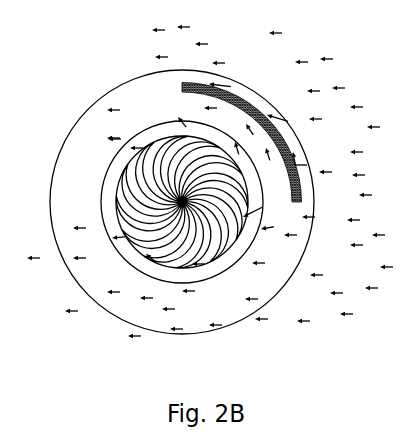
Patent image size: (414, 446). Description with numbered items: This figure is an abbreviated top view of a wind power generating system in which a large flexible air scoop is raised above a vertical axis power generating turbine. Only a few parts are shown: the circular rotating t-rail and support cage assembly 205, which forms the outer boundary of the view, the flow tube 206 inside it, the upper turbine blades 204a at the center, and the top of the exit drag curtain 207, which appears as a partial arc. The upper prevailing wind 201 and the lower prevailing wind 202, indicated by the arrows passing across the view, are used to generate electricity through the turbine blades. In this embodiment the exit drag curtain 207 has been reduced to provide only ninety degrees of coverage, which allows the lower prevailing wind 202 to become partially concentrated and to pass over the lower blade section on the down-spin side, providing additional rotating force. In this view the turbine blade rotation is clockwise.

The upper prevailing wind 201 is at (210, 182).
The lower prevailing wind 202 is at (210, 182).
The upper turbine blade section 204a is at (130, 200).
The circular rotating t-rail and support cage assembly 205 is at (83, 134).
The flow tube 206 is at (113, 180).
The exit drag curtain 207 is at (242, 95).